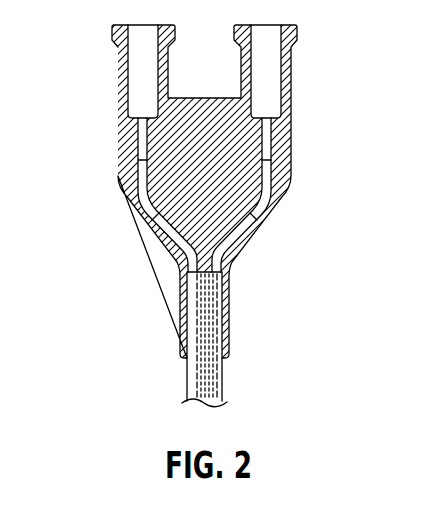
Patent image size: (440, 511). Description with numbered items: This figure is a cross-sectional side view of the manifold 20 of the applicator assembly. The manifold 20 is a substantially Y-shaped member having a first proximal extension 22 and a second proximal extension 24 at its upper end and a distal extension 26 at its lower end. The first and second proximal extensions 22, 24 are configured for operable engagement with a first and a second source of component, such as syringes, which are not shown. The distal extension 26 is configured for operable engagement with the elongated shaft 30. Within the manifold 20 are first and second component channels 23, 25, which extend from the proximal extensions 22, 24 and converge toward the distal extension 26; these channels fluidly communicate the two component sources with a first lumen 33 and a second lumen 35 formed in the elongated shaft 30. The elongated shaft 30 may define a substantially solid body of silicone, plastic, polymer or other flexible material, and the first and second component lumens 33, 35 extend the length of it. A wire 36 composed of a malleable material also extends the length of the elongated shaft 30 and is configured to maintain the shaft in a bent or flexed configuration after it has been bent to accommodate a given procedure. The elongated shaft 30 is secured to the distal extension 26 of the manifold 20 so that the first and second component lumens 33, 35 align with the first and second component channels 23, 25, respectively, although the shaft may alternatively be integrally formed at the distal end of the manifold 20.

The manifold 20 is at (96, 125).
The first proximal extension 22 is at (118, 72).
The second proximal extension 24 is at (291, 70).
The first component channel 23 is at (138, 188).
The second component channel 25 is at (260, 196).
The distal extension 26 is at (230, 320).
The elongated shaft 30 is at (188, 370).
The first component lumen 33 is at (188, 387).
The second component lumen 35 is at (218, 387).
The wire 36 is at (208, 290).